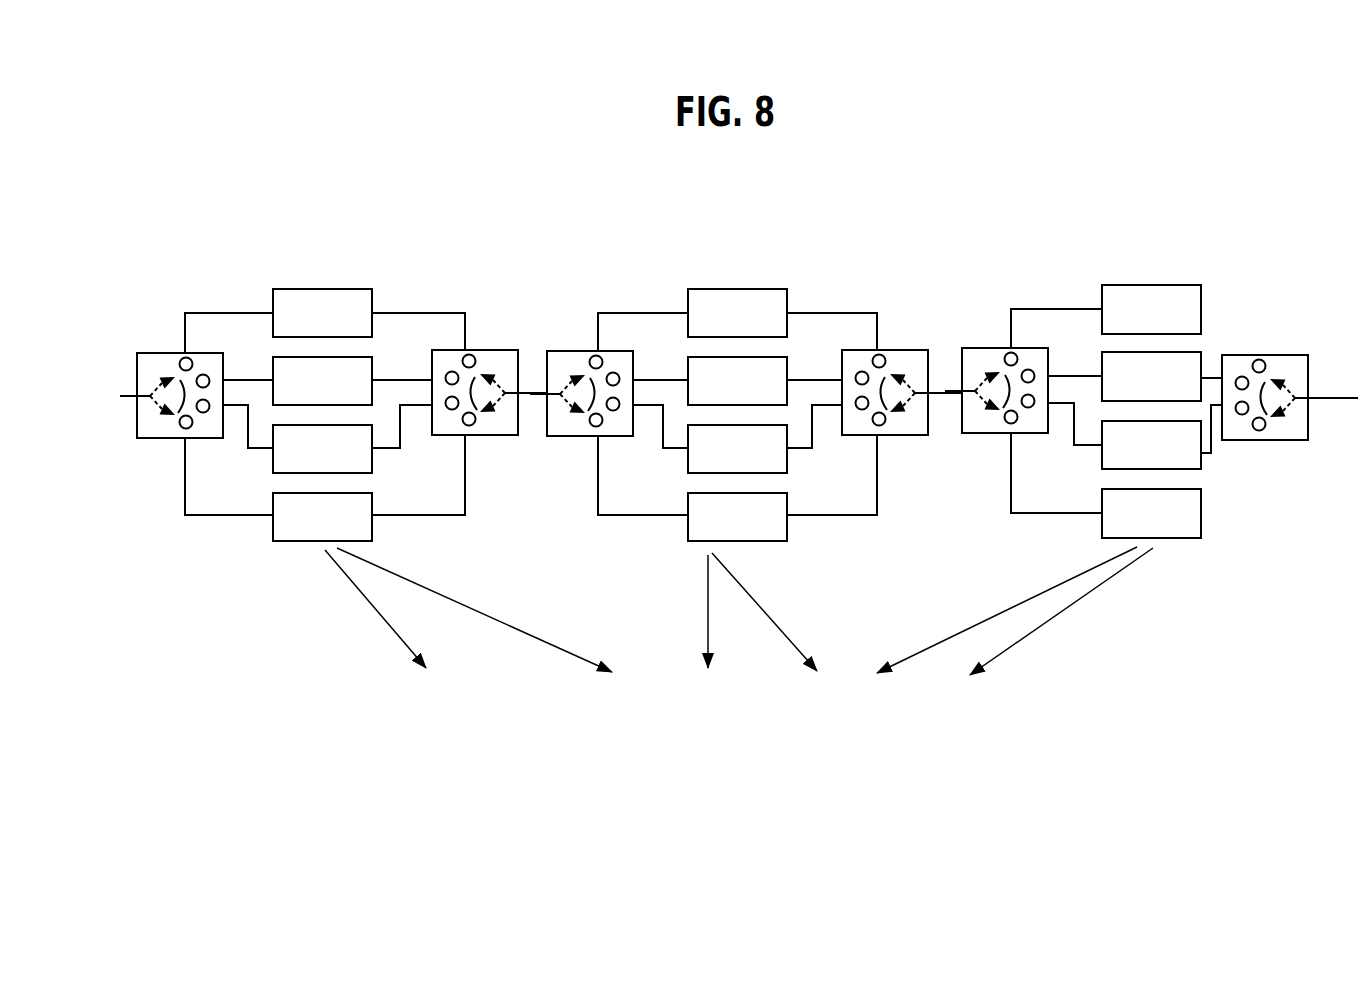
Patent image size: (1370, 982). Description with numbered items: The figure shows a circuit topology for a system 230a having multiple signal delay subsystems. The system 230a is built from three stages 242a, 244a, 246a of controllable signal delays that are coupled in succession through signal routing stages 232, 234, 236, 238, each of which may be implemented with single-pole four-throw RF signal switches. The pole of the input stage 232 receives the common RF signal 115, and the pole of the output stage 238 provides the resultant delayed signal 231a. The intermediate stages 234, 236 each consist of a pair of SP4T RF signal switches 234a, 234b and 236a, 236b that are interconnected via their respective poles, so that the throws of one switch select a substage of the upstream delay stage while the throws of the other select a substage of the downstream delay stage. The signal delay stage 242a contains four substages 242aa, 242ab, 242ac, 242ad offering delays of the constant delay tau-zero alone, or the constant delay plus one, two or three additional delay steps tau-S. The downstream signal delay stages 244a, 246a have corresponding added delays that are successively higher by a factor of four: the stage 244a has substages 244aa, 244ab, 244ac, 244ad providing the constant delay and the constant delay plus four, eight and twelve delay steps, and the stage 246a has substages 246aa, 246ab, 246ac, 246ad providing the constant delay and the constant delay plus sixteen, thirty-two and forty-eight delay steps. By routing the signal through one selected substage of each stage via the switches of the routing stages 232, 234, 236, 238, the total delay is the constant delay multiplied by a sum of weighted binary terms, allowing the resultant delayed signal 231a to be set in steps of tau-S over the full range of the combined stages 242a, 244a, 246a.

The system with multiple signal delay subsystems 230a is at (1086, 116).
The resultant delayed signal 231a is at (121, 395).
The output signal routing stage 238 is at (152, 353).
The signal delay stage 246a is at (329, 242).
The signal delay substage 246aa is at (283, 289).
The signal delay substage 246ab is at (373, 358).
The signal delay substage 246ac is at (272, 463).
The signal delay substage 246ad is at (373, 528).
The intermediate signal routing stage 236 is at (531, 322).
The SP4T RF signal switch 236b is at (483, 437).
The SP4T RF signal switch 236a is at (562, 437).
The signal delay stage 244a is at (742, 260).
The signal delay substage 244aa is at (698, 287).
The signal delay substage 244ab is at (807, 358).
The signal delay substage 244ac is at (685, 463).
The signal delay substage 244ad is at (788, 528).
The intermediate signal routing stage 234 is at (932, 300).
The SP4T RF signal switch 234b is at (892, 435).
The SP4T RF signal switch 234a is at (987, 434).
The signal delay stage 242a is at (1146, 260).
The signal delay substage 242aa is at (1116, 285).
The signal delay substage 242ab is at (1205, 352).
The signal delay substage 242ac is at (1102, 455).
The signal delay substage 242ad is at (1203, 512).
The input signal routing stage 232 is at (1255, 355).
The common RF signal 115 is at (1312, 397).